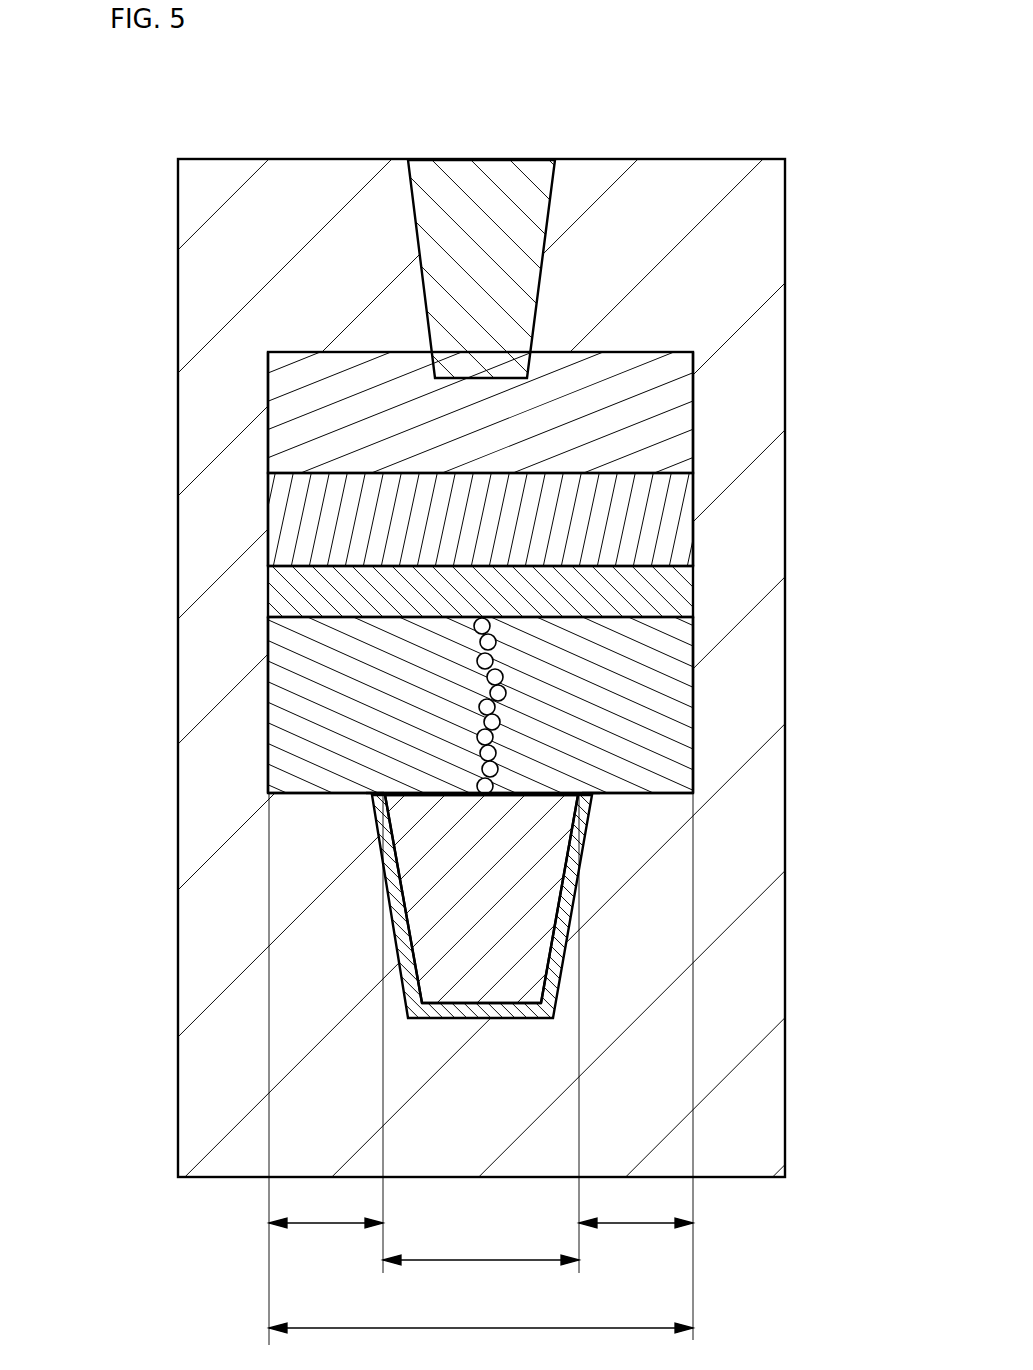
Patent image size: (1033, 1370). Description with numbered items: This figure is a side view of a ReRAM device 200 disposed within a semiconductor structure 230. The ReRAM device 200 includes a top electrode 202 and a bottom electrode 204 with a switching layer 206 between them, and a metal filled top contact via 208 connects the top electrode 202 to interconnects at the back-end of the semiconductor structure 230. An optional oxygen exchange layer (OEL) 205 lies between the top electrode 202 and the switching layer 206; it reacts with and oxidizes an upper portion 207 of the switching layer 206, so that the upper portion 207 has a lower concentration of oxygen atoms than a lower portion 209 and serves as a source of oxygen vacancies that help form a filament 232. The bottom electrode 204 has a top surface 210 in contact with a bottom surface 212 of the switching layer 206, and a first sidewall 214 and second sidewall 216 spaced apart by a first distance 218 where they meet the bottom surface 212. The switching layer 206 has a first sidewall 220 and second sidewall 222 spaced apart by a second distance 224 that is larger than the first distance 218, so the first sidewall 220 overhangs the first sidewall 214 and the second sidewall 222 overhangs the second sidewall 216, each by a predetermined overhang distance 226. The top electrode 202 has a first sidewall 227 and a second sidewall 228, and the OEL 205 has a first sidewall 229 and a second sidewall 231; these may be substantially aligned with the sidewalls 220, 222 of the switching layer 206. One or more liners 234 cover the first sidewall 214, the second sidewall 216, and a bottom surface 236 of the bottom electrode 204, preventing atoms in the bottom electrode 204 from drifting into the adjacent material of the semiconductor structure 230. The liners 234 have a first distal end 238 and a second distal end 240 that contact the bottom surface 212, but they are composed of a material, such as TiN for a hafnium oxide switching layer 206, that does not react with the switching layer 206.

The ReRAM device 200 is at (522, 90).
The top electrode 202 is at (312, 428).
The bottom electrode 204 is at (485, 927).
The oxygen exchange layer (OEL) 205 is at (314, 525).
The switching layer 206 is at (114, 576).
The upper portion of the switching layer 207 is at (314, 602).
The metal filled top contact via 208 is at (528, 173).
The lower portion of the switching layer 209 is at (307, 687).
The top surface of the bottom electrode 210 is at (515, 796).
The bottom surface of the switching layer 212 is at (557, 793).
The first sidewall of the bottom electrode 214 is at (417, 985).
The second sidewall of the bottom electrode 216 is at (547, 965).
The first distance 218 is at (487, 1262).
The first sidewall of the switching layer 220 is at (268, 728).
The second sidewall of the switching layer 222 is at (693, 663).
The second distance 224 is at (466, 1330).
The predetermined overhang distance 226 is at (343, 1227).
The first sidewall of the top electrode 227 is at (268, 370).
The second sidewall of the top electrode 228 is at (693, 392).
The first sidewall of the OEL 229 is at (268, 491).
The semiconductor structure 230 is at (786, 197).
The second sidewall of the OEL 231 is at (693, 528).
The filament 232 is at (500, 723).
The liners 234 is at (577, 915).
The bottom surface of the bottom electrode 236 is at (512, 1013).
The first distal end of the liner 238 is at (377, 796).
The second distal end of the liner 240 is at (590, 795).